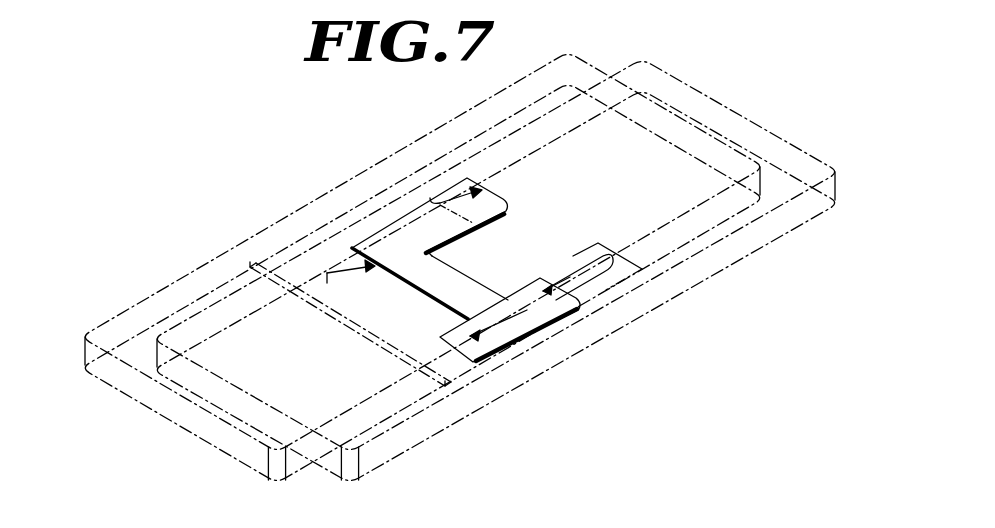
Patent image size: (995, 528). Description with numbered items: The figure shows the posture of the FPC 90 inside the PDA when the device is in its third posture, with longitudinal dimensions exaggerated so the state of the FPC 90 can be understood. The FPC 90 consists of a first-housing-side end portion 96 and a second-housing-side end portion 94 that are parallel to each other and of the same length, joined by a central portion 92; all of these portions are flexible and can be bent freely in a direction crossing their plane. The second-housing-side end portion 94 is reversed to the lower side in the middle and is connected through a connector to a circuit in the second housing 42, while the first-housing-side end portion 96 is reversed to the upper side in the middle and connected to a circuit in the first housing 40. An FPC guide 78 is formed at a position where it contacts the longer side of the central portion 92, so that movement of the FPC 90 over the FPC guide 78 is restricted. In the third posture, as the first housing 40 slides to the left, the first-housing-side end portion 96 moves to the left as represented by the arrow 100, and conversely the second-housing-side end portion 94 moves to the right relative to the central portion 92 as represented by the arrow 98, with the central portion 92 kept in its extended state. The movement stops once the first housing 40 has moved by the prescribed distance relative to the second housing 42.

The first housing 40 is at (580, 50).
The second housing 42 is at (578, 358).
The FPC guide 78 is at (263, 260).
The FPC 90 is at (479, 295).
The central portion 92 is at (478, 287).
The second-housing-side end portion 94 is at (437, 250).
The first-housing-side end portion 96 is at (463, 358).
The arrow 98 is at (352, 262).
The arrow 100 is at (573, 326).